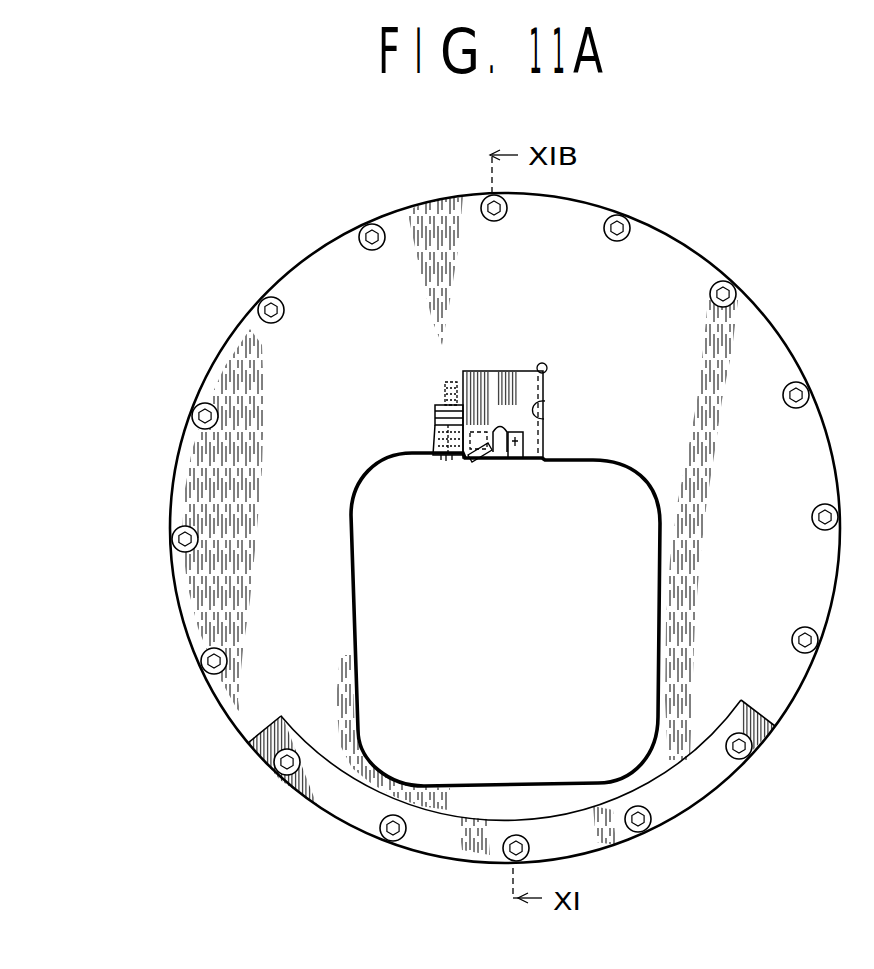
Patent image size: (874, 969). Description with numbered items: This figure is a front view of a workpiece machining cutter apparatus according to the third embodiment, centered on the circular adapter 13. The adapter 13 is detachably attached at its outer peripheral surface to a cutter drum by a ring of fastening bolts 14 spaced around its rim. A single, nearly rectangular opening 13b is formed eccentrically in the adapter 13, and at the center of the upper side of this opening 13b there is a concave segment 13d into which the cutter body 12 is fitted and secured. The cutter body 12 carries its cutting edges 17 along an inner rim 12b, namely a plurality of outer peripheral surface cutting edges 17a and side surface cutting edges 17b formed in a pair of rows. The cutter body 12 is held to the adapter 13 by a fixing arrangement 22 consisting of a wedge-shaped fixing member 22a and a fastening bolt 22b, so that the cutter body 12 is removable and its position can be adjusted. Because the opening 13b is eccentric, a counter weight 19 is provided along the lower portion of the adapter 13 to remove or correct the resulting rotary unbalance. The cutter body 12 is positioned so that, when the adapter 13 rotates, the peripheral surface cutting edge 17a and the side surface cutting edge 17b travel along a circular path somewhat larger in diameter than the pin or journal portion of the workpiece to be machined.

The cutter body 12 is at (520, 394).
The inner rim 12b is at (553, 461).
The adapter 13 is at (746, 350).
The opening 13b is at (659, 576).
The concave segment 13d is at (540, 412).
The fastening bolts 14 is at (720, 292).
The cutting edges 17 is at (618, 498).
The outer peripheral surface cutting edges 17a is at (480, 462).
The side surface cutting edges 17b is at (513, 460).
The counter weight 19 is at (677, 795).
The fixing means 22 is at (349, 367).
The wedge-shaped fixing member 22a is at (435, 412).
The fastening bolt 22b is at (434, 437).